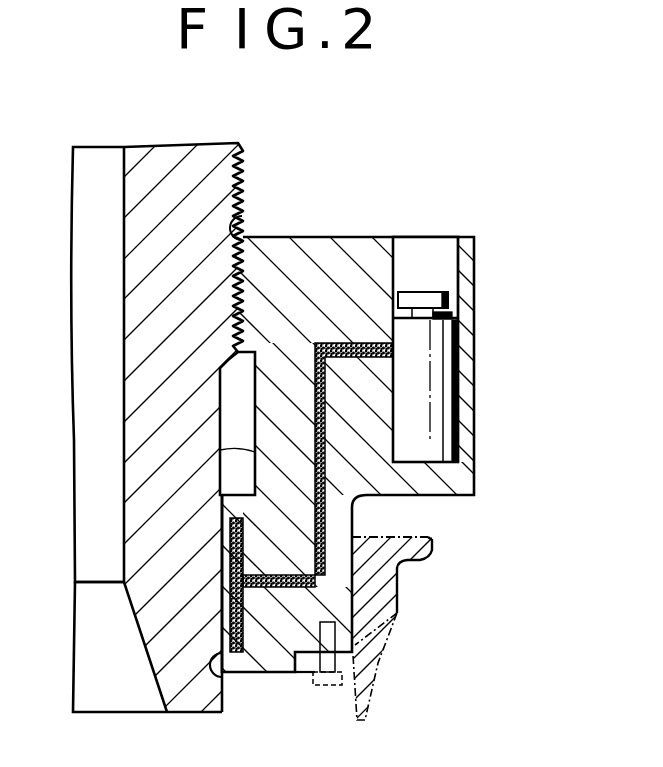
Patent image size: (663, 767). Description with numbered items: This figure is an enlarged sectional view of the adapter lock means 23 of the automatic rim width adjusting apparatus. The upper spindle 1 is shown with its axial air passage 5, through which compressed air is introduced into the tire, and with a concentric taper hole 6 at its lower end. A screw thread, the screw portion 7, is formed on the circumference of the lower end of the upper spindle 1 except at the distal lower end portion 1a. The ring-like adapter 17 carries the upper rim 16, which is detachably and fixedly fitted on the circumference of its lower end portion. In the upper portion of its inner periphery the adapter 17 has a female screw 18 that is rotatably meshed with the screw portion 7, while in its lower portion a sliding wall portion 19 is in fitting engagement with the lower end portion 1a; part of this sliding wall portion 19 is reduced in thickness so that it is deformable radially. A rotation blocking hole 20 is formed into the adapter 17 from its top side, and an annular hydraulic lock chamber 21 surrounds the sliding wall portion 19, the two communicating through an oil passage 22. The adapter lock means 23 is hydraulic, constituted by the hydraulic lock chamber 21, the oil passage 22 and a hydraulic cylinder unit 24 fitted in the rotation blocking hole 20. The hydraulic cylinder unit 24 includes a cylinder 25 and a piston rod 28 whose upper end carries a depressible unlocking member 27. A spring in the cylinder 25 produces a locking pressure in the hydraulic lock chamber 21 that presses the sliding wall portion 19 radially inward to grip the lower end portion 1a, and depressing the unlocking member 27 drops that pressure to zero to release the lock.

The upper spindle 1 is at (197, 170).
The distal lower end portion 1a is at (255, 450).
The axial air passage 5 is at (113, 188).
The concentric taper hole 6 is at (152, 671).
The screw portion 7 is at (241, 190).
The upper rim 16 is at (398, 615).
The adapter 17 is at (343, 257).
The female screw 18 is at (243, 212).
The sliding wall portion 19 is at (228, 687).
The rotation blocking hole 20 is at (432, 250).
The hydraulic lock chamber 21 is at (238, 627).
The oil passage 22 is at (400, 350).
The adapter lock means 23 is at (420, 417).
The hydraulic cylinder unit 24 is at (230, 580).
The cylinder 25 is at (437, 448).
The depressible unlocking member 27 is at (428, 292).
The piston rod 28 is at (458, 318).